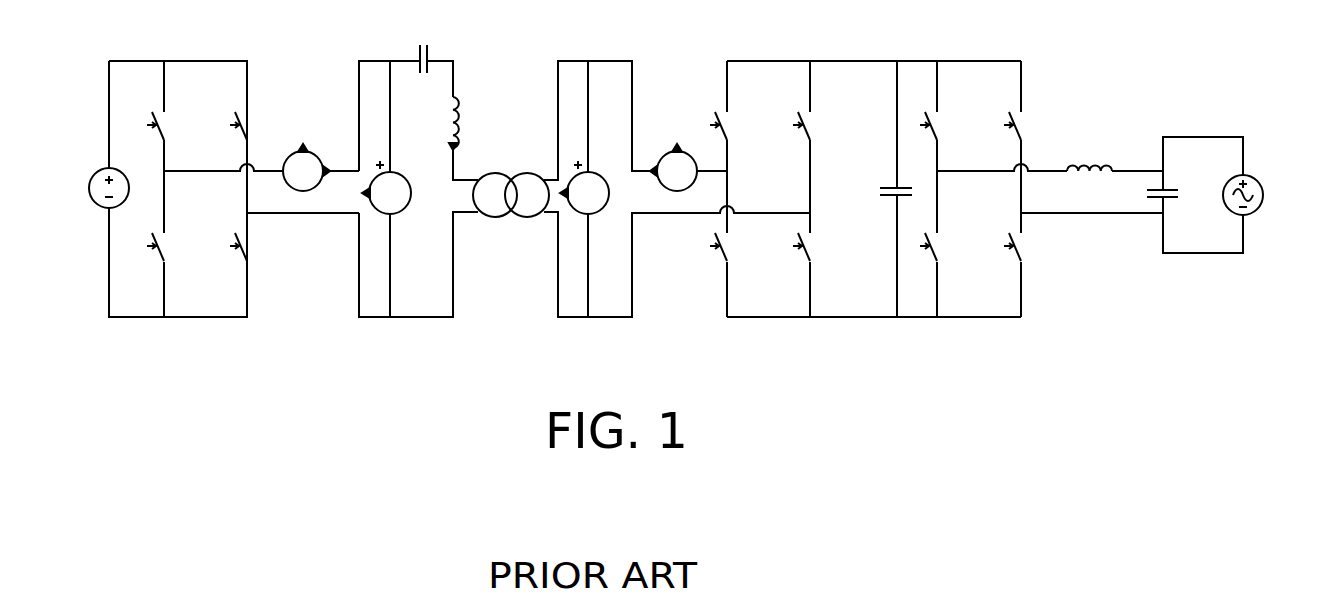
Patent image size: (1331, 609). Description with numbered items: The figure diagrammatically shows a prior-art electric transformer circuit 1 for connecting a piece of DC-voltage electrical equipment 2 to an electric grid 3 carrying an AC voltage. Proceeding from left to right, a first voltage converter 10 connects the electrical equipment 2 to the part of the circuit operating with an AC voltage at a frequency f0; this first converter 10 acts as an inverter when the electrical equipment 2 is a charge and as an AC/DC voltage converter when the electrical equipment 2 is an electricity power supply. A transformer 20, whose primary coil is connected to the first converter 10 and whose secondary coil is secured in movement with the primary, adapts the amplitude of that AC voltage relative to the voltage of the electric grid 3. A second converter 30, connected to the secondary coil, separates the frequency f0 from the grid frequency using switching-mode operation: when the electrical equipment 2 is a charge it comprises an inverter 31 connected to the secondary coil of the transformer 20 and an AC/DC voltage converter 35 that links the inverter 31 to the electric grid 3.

The prior art power converter 1 is at (145, 45).
The electrical equipment 2 is at (95, 174).
The electric grid 3 is at (1258, 178).
The first voltage converter 10 is at (153, 326).
The transformer 20 is at (348, 326).
The second converter 30 is at (1000, 371).
The inverter 31 is at (820, 326).
The AC/DC voltage converter 35 is at (1033, 326).